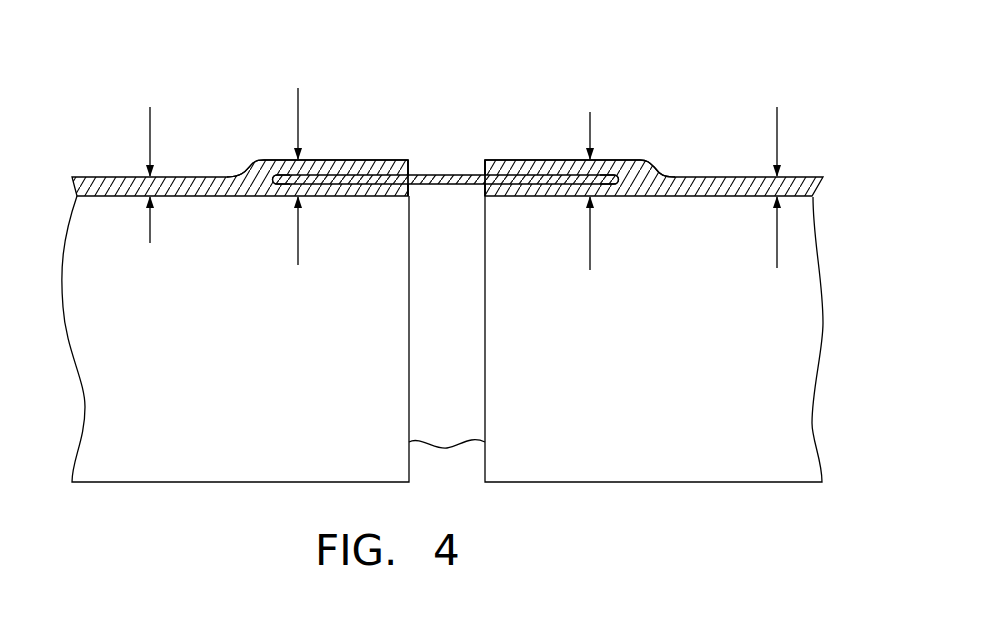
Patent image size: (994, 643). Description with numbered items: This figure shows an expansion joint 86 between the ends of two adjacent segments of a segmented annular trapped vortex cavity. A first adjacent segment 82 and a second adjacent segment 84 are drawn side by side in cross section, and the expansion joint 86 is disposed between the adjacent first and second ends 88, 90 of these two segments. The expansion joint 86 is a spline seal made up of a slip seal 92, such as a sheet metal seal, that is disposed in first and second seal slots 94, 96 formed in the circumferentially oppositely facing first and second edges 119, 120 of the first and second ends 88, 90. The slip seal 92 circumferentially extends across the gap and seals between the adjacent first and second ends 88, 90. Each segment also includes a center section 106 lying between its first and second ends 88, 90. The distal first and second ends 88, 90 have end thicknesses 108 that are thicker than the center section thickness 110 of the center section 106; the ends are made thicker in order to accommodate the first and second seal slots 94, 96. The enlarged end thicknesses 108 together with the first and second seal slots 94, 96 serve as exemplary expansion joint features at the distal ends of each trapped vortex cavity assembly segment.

The first adjacent segment 82 is at (105, 177).
The second adjacent segment 84 is at (797, 177).
The expansion joint 86 is at (458, 134).
The first end 88 is at (273, 160).
The second end 90 is at (623, 160).
The slip seal 92 is at (428, 175).
The first seal slot 94 is at (277, 185).
The second seal slot 96 is at (616, 184).
The center section 106 is at (258, 482).
The end thickness 108 is at (298, 112).
The center section thickness 110 is at (150, 132).
The first edge 119 is at (408, 190).
The second edge 120 is at (477, 175).